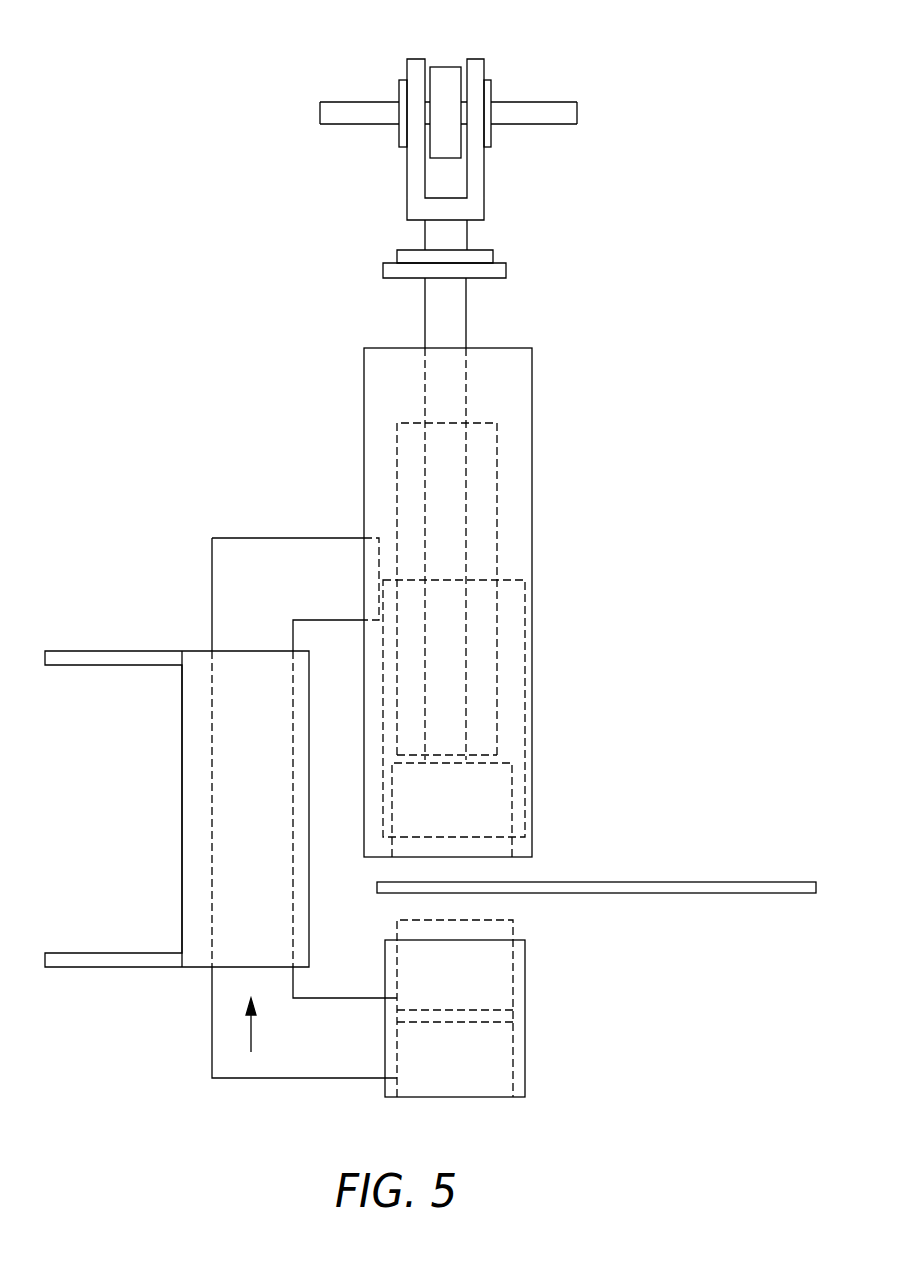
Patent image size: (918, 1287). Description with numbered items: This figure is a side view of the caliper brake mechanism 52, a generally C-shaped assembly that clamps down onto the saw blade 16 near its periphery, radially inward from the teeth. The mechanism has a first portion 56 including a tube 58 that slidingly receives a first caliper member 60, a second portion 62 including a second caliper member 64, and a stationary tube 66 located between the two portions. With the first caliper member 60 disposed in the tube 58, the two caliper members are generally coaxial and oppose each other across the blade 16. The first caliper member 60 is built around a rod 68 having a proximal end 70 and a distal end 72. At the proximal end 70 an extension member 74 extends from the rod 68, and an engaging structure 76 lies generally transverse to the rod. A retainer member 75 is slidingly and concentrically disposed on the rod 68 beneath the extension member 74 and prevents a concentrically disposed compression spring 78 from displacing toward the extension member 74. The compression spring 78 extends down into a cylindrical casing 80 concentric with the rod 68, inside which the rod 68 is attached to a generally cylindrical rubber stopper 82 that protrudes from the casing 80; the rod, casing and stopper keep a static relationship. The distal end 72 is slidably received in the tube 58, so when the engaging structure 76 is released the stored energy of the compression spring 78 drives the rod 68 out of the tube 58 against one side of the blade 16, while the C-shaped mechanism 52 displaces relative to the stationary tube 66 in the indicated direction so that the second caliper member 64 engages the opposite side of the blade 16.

The blade 16 is at (764, 882).
The caliper brake mechanism 52 is at (137, 290).
The first portion 56 is at (335, 548).
The tube 58 is at (522, 393).
The first caliper member 60 is at (458, 333).
The second portion 62 is at (333, 1067).
The second caliper member 64 is at (513, 986).
The tube 66 is at (218, 738).
The rod 68 is at (432, 290).
The proximal end 70 is at (467, 207).
The distal end 72 is at (472, 755).
The extension member 74 is at (477, 133).
The retainer member 75 is at (507, 269).
The engaging structure 76 is at (445, 80).
The compression spring 78 is at (488, 493).
The cylindrical casing 80 is at (512, 612).
The rubber stopper 82 is at (498, 850).